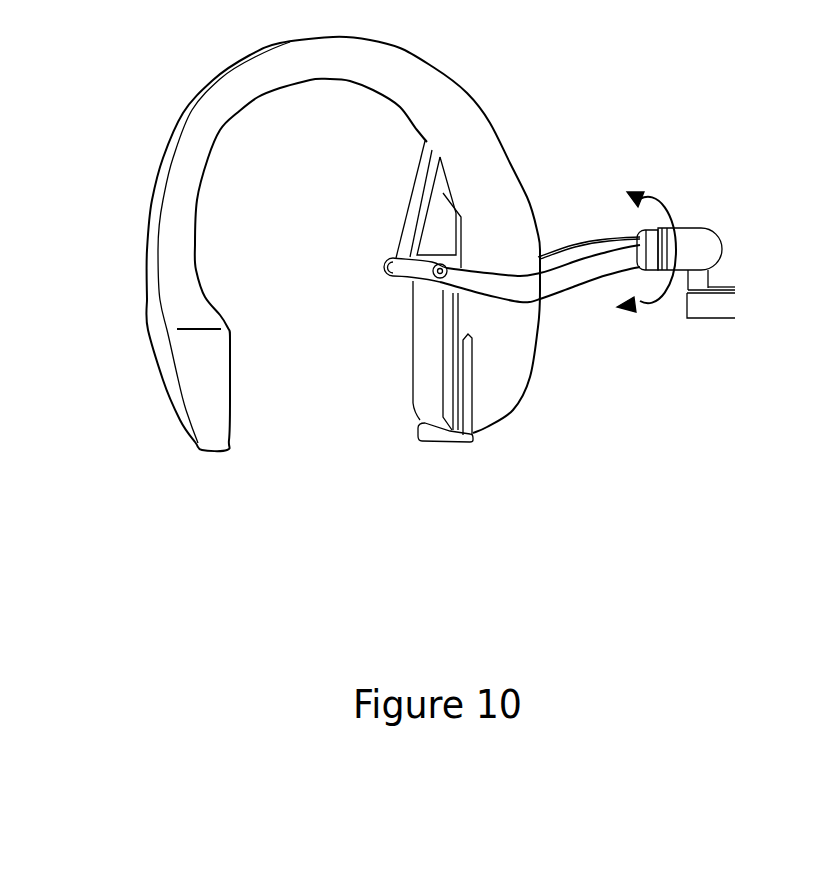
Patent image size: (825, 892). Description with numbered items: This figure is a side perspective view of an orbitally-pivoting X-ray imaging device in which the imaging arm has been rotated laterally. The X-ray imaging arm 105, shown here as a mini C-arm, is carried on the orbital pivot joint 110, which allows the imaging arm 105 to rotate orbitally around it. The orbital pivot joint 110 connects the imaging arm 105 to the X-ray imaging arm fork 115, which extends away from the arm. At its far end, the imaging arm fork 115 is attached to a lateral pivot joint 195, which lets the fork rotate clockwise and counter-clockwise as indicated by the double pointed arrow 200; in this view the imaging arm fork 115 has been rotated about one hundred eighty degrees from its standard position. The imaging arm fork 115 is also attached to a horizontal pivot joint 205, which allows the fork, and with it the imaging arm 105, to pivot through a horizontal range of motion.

The X-ray imaging arm 105 is at (493, 403).
The orbital pivot joint 110 is at (436, 278).
The X-ray imaging arm fork 115 is at (573, 299).
The lateral pivot joint 195 is at (679, 275).
The double pointed arrow 200 is at (667, 218).
The horizontal pivot joint 205 is at (701, 327).